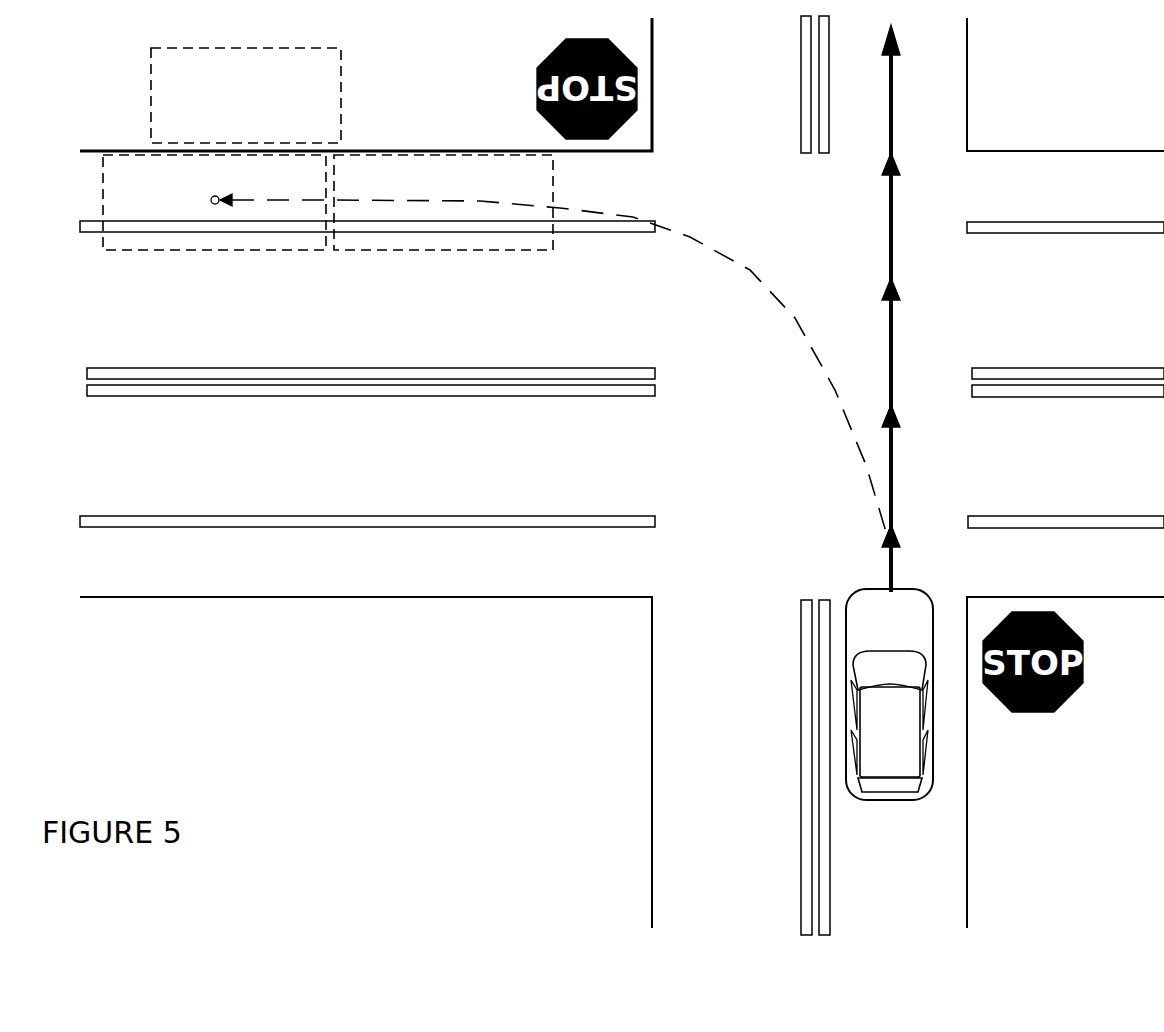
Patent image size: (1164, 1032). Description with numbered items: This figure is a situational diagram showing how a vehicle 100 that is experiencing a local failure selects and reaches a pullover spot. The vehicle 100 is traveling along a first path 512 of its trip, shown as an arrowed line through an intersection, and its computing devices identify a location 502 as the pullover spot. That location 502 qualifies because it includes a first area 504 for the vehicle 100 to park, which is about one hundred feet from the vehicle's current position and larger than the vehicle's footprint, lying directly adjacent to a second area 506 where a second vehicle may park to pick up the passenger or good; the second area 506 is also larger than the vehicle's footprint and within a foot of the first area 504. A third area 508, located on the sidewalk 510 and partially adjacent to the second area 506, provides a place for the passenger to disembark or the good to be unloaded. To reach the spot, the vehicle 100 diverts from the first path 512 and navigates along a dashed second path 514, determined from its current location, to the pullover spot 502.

The vehicle 100 is at (906, 731).
The location 502 is at (212, 206).
The first area 504 is at (257, 252).
The second area 506 is at (428, 252).
The third area 508 is at (341, 90).
The sidewalk 510 is at (125, 121).
The first path 512 is at (913, 308).
The second path 514 is at (560, 371).